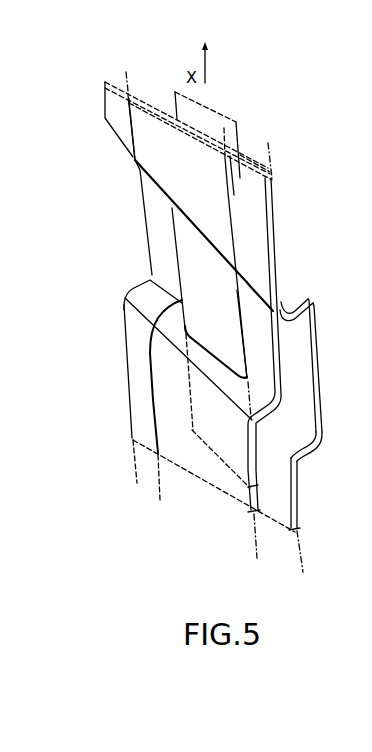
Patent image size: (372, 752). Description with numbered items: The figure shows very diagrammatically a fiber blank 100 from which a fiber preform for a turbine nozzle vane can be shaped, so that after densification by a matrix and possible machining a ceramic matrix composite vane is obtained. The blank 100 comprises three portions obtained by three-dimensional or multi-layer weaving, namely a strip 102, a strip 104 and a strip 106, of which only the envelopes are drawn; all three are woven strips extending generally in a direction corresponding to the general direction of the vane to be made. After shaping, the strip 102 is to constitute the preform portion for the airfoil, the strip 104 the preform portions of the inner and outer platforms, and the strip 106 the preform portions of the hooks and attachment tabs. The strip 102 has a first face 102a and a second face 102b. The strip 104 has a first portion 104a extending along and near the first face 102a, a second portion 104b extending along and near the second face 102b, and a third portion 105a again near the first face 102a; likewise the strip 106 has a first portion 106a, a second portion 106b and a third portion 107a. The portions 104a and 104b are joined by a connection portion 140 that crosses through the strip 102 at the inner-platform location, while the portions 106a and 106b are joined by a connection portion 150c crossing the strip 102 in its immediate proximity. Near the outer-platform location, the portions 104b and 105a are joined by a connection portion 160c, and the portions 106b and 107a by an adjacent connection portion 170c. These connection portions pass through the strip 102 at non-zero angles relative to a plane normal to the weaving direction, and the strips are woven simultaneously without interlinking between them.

The fiber blank 100 is at (178, 505).
The strip 102 is at (175, 222).
The first face of the strip 102a is at (183, 248).
The second face of the strip 102b is at (222, 119).
The strip 104 is at (141, 355).
The first portion of strip 104 104a is at (163, 397).
The second portion of strip 104 104b is at (273, 342).
The third portion of strip 104 105a is at (157, 165).
The strip 106 is at (324, 384).
The first portion of strip 106 106a is at (276, 493).
The second portion of strip 106 106b is at (317, 385).
The third portion of strip 106 107a is at (253, 175).
The bend 140 is at (302, 409).
The connection portion 150c is at (305, 447).
The connection portion 160c is at (244, 276).
The connection portion 170c is at (288, 293).